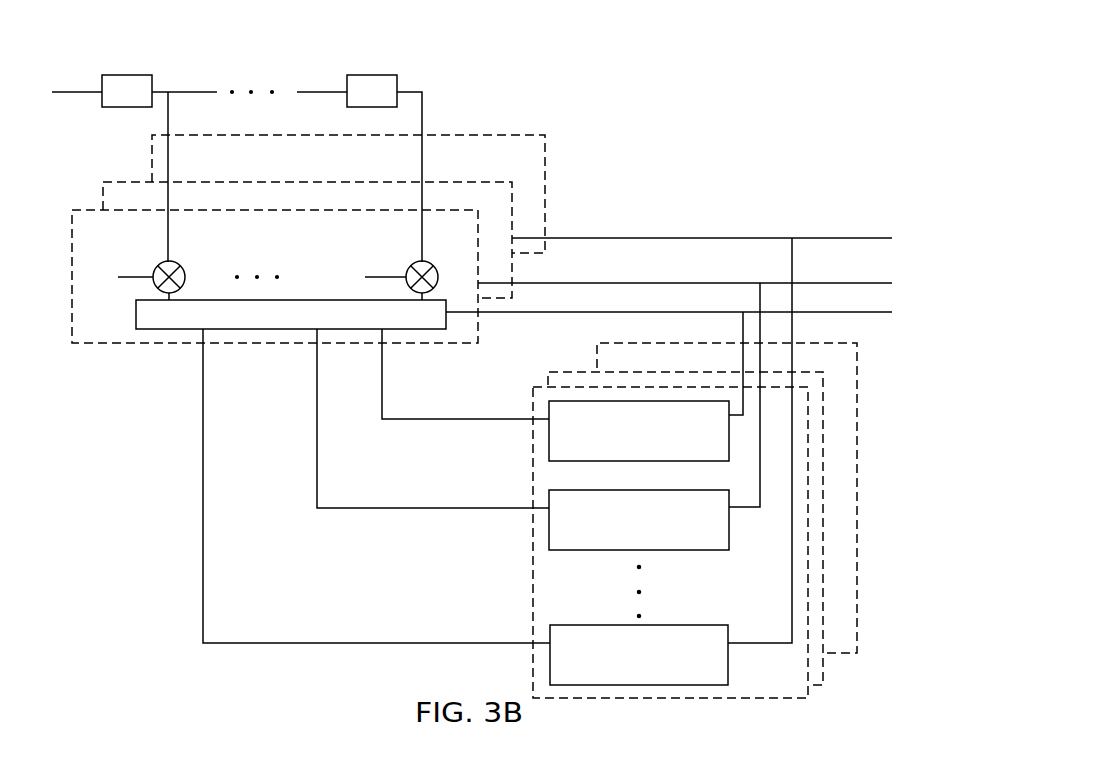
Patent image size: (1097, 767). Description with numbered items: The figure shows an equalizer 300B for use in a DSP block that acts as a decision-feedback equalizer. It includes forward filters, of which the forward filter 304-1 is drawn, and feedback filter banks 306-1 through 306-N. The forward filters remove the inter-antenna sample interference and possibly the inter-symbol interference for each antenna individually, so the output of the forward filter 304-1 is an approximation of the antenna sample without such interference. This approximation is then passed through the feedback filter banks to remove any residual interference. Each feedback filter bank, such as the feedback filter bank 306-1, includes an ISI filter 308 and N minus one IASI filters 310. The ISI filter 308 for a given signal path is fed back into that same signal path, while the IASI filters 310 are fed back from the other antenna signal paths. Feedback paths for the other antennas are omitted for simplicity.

The equalizer 300B is at (160, 40).
The forward filter 304-1 is at (322, 257).
The feedback filter bank 306-N is at (828, 343).
The feedback filter bank 306-1 is at (535, 625).
The ISI filter 308 is at (657, 452).
The IASI filter 310 is at (657, 542).